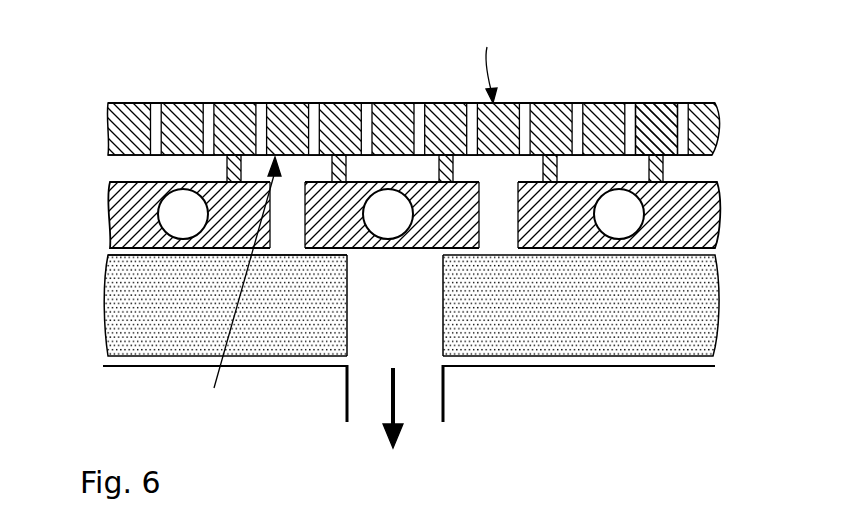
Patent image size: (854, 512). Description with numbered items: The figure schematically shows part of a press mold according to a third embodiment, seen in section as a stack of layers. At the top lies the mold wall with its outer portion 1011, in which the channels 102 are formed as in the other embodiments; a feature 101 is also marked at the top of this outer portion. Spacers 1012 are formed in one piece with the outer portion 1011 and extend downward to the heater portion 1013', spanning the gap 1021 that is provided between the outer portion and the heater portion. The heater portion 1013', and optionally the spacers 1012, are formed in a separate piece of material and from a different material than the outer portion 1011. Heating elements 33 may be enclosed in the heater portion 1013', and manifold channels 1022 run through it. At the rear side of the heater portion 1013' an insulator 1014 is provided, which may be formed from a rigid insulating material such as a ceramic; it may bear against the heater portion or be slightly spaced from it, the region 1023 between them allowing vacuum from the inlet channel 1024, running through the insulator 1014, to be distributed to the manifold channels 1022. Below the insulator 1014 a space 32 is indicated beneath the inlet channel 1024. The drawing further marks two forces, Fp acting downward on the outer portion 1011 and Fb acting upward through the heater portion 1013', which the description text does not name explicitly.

The first plate 101 is at (430, 96).
The outer portion 1011 is at (655, 103).
The spacers 1012 is at (663, 165).
The heater portion 1013' is at (451, 294).
The insulator 1014 is at (411, 365).
The channels 102 is at (255, 103).
The gap 1021 is at (170, 173).
The manifold channels 1022 is at (288, 242).
The gap between intermediate and lower plate 1023 is at (118, 253).
The inlet channel 1024 is at (408, 322).
The outlet gap 32 is at (370, 387).
The heating elements 33 is at (170, 227).
The pressing force Fp is at (490, 61).
The reaction force Fb is at (242, 290).